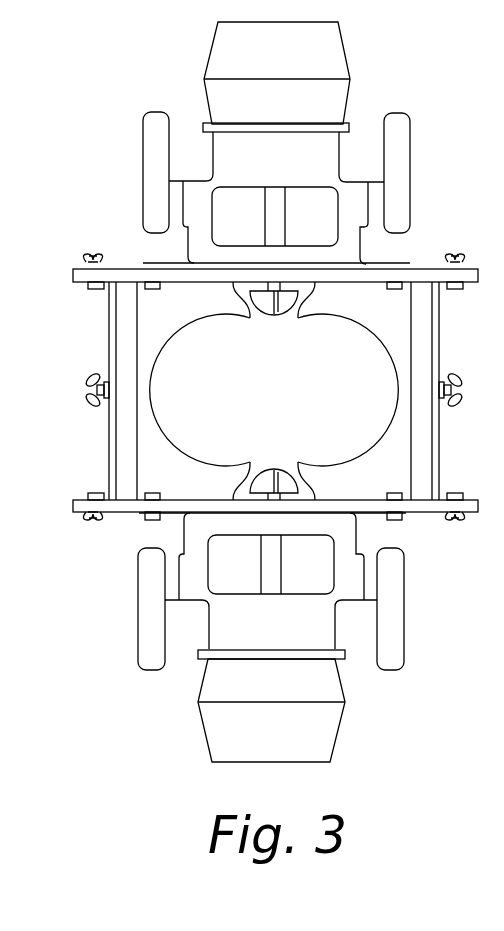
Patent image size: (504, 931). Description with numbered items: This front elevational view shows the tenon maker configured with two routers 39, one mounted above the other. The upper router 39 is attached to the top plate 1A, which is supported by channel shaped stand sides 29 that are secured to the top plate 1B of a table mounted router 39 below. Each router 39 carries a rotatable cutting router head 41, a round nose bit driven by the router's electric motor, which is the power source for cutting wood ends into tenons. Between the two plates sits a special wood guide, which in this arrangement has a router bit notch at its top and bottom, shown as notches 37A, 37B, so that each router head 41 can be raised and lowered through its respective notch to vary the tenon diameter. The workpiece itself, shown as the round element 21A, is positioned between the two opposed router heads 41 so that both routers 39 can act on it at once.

The router 39 is at (291, 69).
The top plate 1A is at (122, 268).
The top plate 1B is at (122, 513).
The channel shaped stand side 29 is at (109, 338).
The pipe 21A is at (347, 396).
The router bit notch 37A is at (243, 308).
The router bit notch 37B is at (241, 476).
The router head 41 is at (298, 296).